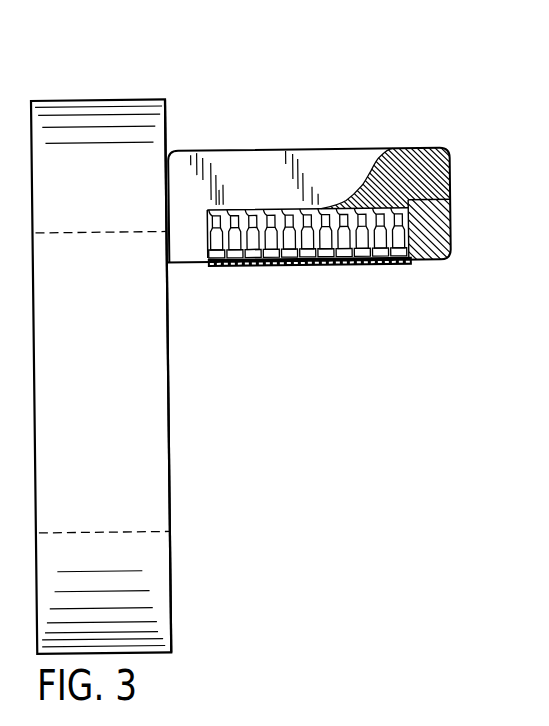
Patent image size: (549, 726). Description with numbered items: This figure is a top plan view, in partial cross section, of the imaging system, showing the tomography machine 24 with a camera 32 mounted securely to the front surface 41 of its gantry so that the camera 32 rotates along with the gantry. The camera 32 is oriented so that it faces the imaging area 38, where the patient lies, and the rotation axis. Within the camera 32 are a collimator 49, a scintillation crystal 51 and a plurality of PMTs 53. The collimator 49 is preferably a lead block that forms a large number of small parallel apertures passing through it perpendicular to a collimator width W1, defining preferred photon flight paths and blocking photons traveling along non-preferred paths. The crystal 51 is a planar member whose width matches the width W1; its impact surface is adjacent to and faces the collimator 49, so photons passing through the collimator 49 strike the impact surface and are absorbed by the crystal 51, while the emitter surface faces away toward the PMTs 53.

The tomography machine 24 is at (98, 93).
The front surface 41 is at (166, 130).
The camera 32 is at (322, 167).
The PMTs 53 is at (389, 226).
The scintillation crystal 51 is at (451, 238).
The collimator 49 is at (411, 268).
The imaging area 38 is at (418, 288).
The collimator width W1 is at (407, 280).